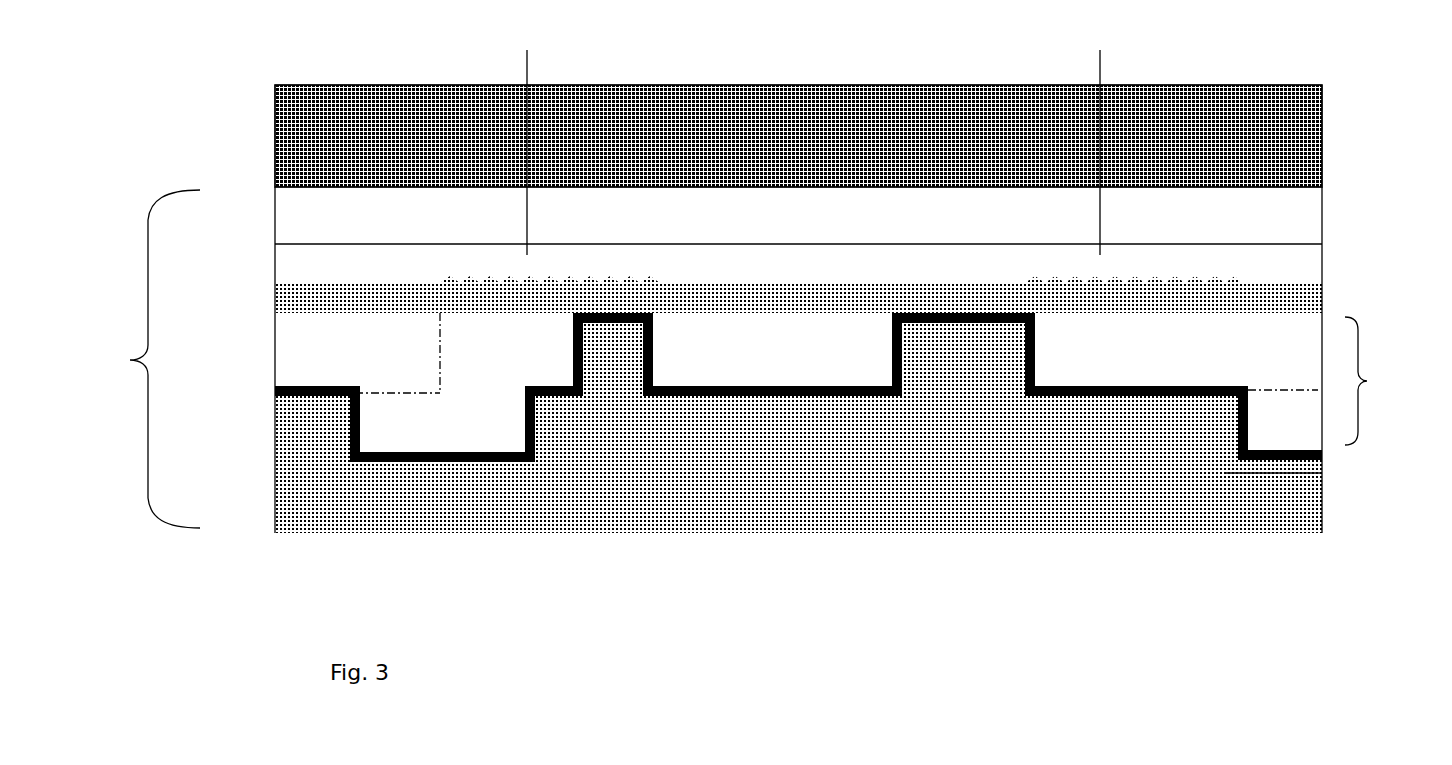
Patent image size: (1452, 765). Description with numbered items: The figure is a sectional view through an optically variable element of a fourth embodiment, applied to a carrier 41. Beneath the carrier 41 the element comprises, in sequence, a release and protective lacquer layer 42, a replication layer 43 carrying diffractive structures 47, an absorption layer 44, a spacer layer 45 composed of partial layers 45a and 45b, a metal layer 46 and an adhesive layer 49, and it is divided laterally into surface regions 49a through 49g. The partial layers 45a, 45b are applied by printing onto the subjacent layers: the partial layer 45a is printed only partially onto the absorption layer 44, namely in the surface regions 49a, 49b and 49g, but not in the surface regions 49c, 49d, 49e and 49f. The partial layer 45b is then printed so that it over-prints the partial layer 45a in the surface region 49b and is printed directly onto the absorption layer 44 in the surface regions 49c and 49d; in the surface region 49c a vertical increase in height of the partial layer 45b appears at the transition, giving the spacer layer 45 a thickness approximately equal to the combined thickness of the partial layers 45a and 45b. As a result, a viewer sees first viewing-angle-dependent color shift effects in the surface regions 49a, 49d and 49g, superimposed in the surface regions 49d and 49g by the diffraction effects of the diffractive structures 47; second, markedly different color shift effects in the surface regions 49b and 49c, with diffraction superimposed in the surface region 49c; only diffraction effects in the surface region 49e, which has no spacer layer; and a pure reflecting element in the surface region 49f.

The carrier 41 is at (1297, 145).
The release and protective lacquer layer 42 is at (308, 229).
The replication layer 43 is at (1285, 258).
The absorption layer 44 is at (277, 298).
The spacer layer 45 is at (776, 359).
The partial layer 45a is at (345, 346).
The partial layer 45b is at (477, 358).
The metal layer 46 is at (320, 400).
The diffractive structures 47 is at (825, 136).
The adhesive layer 49 is at (1320, 480).
The surface region 49a is at (318, 507).
The surface region 49b is at (398, 507).
The surface region 49c is at (477, 507).
The surface region 49d is at (557, 507).
The surface region 49e is at (635, 507).
The surface region 49f is at (980, 500).
The surface region 49g is at (1137, 500).